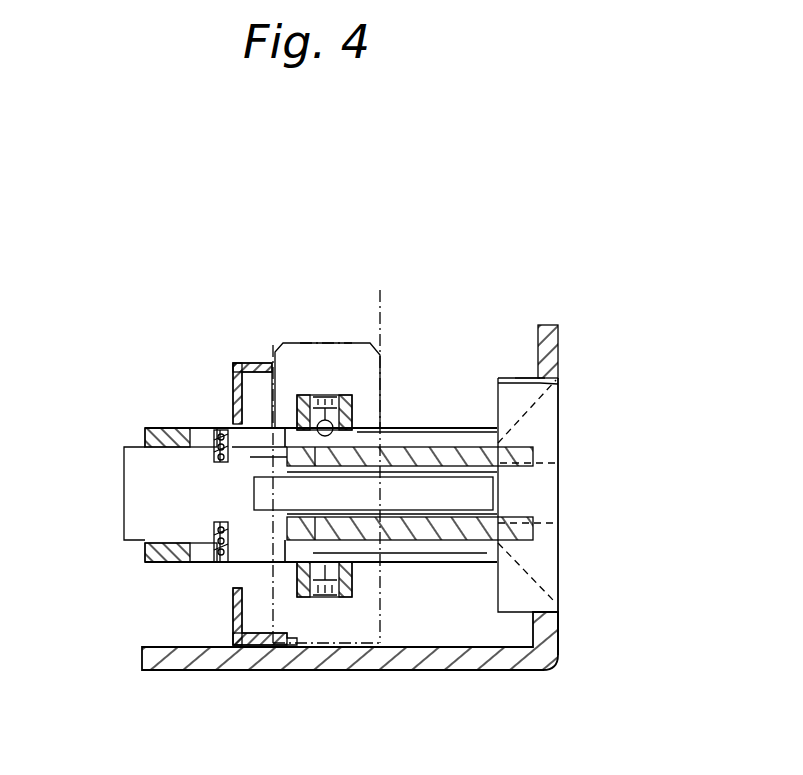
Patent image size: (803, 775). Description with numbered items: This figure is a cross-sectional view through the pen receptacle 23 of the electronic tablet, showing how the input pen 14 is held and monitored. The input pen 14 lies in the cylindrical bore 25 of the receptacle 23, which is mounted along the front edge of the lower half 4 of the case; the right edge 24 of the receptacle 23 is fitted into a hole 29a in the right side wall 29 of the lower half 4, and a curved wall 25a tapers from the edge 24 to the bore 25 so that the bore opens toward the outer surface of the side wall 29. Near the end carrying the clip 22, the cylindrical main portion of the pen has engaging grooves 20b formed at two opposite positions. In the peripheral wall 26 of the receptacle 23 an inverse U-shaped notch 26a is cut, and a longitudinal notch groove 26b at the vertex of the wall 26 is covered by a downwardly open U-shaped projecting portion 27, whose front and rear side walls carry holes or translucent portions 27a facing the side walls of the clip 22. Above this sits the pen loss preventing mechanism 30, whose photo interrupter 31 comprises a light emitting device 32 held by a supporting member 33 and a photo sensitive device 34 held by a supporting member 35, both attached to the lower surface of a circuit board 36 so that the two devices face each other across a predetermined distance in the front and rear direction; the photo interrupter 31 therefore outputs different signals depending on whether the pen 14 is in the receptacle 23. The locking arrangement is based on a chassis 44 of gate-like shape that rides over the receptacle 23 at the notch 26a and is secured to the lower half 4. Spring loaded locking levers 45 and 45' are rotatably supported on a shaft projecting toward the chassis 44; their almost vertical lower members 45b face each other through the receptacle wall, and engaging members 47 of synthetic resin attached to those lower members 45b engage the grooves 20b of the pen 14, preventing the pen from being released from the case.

The lower case half 4 is at (435, 663).
The input pen 14 is at (125, 446).
The engaging grooves 20b is at (248, 463).
The clip 22 is at (480, 486).
The pen receptacle 23 is at (462, 430).
The edge of the receptacle 24 is at (515, 377).
The cylindrical bore 25 is at (205, 540).
The curved wall 25a is at (647, 388).
The peripheral wall 26 is at (408, 437).
The notch 26a is at (205, 566).
The notch groove 26b is at (462, 512).
The projecting portion 27 is at (402, 533).
The holes or translucent portions 27a is at (350, 447).
The right side wall 29 is at (558, 333).
The hole 29a is at (558, 381).
The pen loss preventing mechanism 30 is at (388, 353).
The photo interrupter 31 is at (362, 440).
The light emitting device 32 is at (302, 415).
The supporting member 33 is at (305, 397).
The photo sensitive device 34 is at (363, 597).
The supporting member 35 is at (336, 598).
The circuit board 36 is at (312, 342).
The chassis 44 is at (233, 365).
The spring loaded locking lever 45 is at (152, 551).
The spring loaded locking lever 45' is at (186, 387).
The lower member 45b is at (220, 458).
The engaging members 47 is at (200, 452).